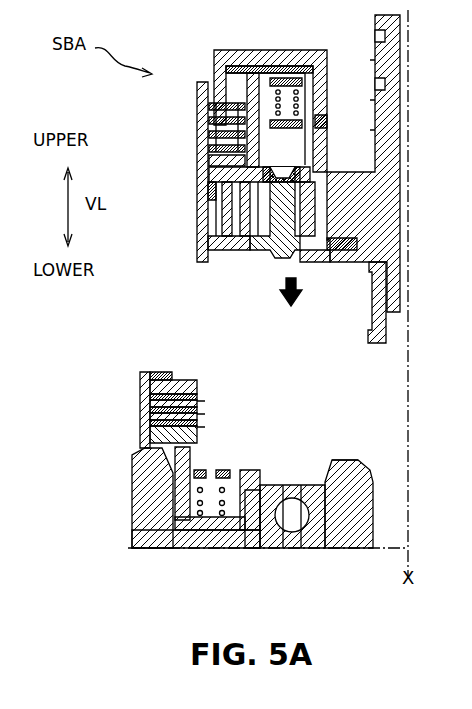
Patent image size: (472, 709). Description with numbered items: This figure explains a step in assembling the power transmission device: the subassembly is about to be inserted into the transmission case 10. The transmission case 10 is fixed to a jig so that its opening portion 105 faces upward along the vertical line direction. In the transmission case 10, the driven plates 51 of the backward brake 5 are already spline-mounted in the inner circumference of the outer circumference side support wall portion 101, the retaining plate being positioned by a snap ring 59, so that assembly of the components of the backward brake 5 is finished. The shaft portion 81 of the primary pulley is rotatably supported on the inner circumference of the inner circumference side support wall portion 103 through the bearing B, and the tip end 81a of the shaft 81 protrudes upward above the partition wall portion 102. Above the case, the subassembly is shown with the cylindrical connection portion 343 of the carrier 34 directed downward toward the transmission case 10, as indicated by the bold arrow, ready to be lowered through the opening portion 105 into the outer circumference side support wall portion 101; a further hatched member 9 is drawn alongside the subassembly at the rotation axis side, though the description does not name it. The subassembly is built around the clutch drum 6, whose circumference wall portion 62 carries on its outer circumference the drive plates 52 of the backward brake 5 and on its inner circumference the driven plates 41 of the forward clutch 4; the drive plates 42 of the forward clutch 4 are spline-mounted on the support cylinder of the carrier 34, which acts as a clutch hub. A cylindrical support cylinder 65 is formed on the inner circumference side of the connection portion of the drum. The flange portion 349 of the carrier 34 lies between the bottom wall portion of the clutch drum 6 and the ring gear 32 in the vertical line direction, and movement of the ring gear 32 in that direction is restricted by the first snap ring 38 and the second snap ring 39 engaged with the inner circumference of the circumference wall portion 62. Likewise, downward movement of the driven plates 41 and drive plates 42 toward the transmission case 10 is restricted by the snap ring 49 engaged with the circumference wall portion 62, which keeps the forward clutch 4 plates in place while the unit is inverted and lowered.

The forward clutch 4 is at (254, 80).
The clutch drum 6 is at (334, 55).
The rotor body 9 is at (400, 140).
The support cylinder 65 is at (234, 64).
The circumference wall portion 62 is at (195, 94).
The driven plates 41 is at (209, 120).
The drive plates 42 is at (209, 136).
The flange portion 349 is at (209, 160).
The first snap ring 38 is at (209, 180).
The snap ring 49 is at (258, 168).
The ring gear 32 is at (215, 226).
The second snap ring 39 is at (208, 245).
The carrier 34 is at (247, 265).
The cylindrical connection portion 343 is at (378, 318).
The backward brake 5 is at (155, 548).
The transmission case 10 is at (124, 504).
The outer circumference side support wall portion 101 is at (153, 374).
The snap ring 59 is at (150, 388).
The drive plates 52 is at (150, 410).
The driven plates 51 is at (150, 430).
The opening portion 105 is at (268, 421).
The partition wall portion 102 is at (190, 548).
The inner circumference side support wall portion 103 is at (242, 548).
The bearing B is at (312, 548).
The shaft portion 81 is at (352, 548).
The tip end 81a is at (345, 460).